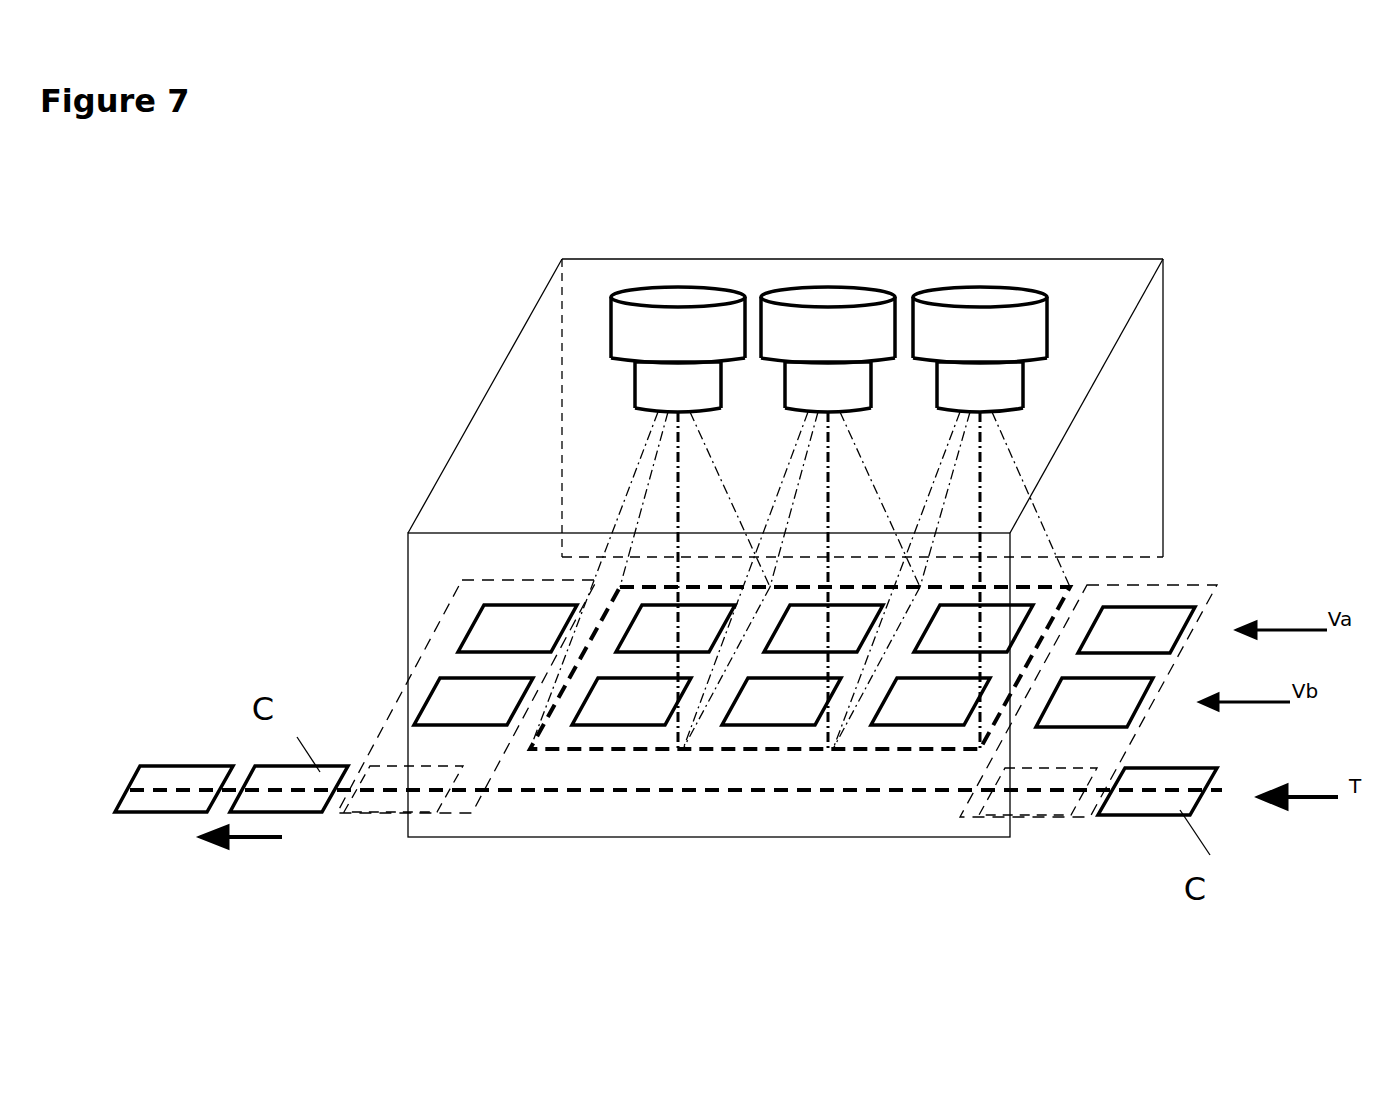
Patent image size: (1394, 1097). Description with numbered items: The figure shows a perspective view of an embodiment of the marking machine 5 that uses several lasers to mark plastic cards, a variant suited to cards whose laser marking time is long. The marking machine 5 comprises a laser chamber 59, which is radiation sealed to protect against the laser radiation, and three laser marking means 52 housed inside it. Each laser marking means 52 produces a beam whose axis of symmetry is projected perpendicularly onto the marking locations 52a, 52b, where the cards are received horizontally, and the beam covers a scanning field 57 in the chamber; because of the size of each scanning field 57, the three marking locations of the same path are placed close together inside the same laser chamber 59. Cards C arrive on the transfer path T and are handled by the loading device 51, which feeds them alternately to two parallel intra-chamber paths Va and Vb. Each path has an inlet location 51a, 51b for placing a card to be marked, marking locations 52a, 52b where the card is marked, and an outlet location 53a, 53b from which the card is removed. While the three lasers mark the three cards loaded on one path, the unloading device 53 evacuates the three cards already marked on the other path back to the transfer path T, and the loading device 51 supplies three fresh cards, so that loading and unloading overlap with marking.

The marking machine 5 is at (854, 553).
The laser chamber 59 is at (1142, 355).
The laser marking means 52 is at (668, 300).
The marking location 52a is at (692, 613).
The marking location 52b is at (620, 710).
The scanning field 57 is at (555, 733).
The unloading device 53 is at (450, 651).
The outlet location 53a is at (500, 617).
The outlet location 53b is at (455, 707).
The loading device 51 is at (1123, 662).
The inlet location 51a is at (1165, 625).
The inlet location 51b is at (1120, 697).